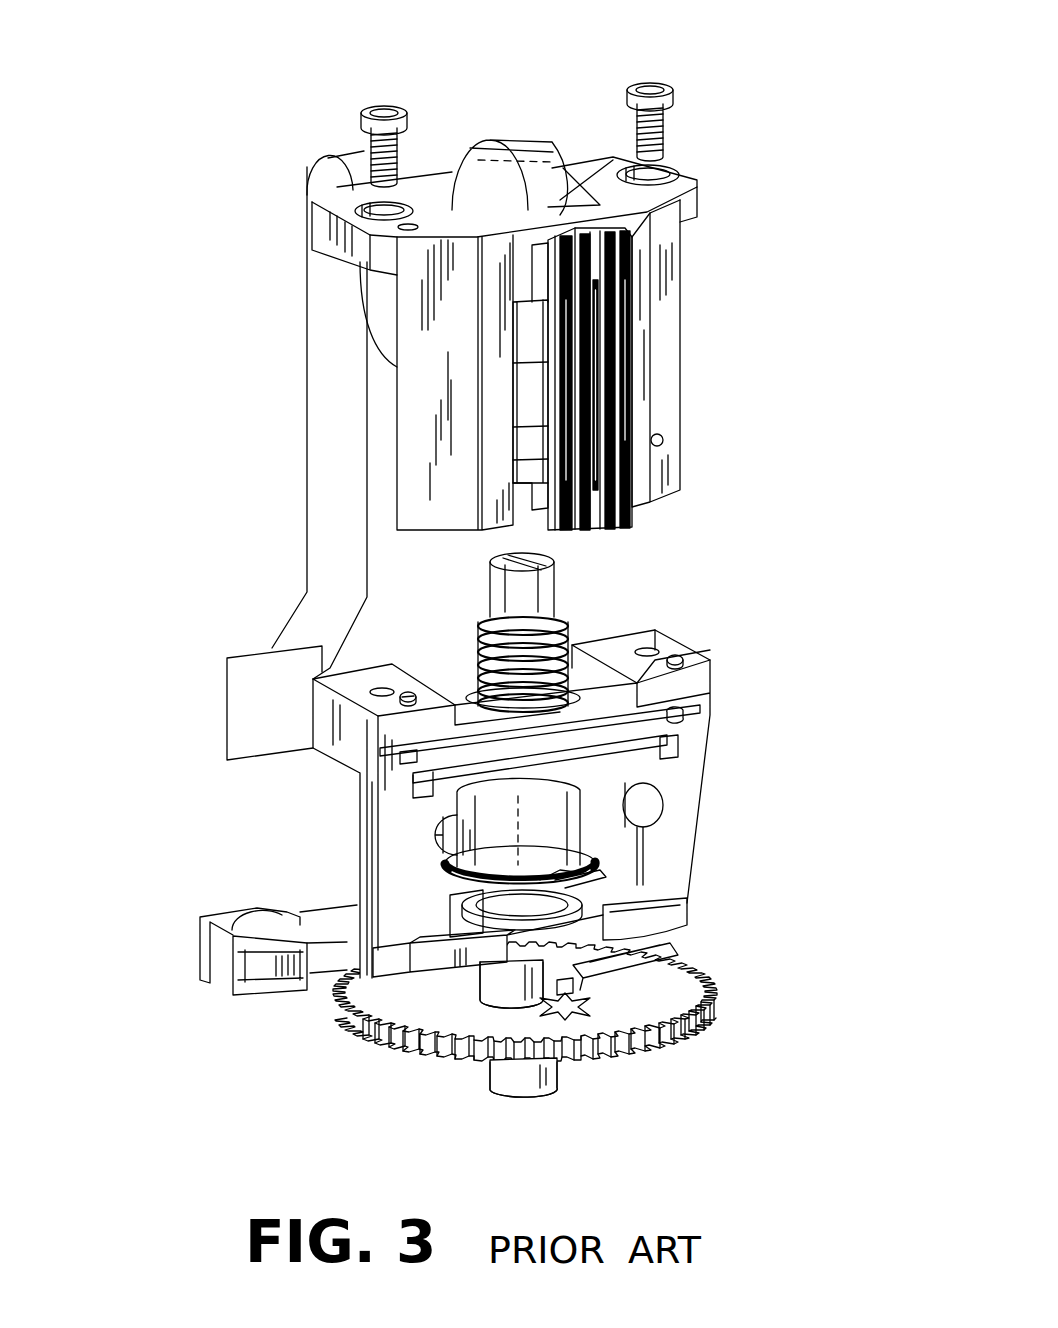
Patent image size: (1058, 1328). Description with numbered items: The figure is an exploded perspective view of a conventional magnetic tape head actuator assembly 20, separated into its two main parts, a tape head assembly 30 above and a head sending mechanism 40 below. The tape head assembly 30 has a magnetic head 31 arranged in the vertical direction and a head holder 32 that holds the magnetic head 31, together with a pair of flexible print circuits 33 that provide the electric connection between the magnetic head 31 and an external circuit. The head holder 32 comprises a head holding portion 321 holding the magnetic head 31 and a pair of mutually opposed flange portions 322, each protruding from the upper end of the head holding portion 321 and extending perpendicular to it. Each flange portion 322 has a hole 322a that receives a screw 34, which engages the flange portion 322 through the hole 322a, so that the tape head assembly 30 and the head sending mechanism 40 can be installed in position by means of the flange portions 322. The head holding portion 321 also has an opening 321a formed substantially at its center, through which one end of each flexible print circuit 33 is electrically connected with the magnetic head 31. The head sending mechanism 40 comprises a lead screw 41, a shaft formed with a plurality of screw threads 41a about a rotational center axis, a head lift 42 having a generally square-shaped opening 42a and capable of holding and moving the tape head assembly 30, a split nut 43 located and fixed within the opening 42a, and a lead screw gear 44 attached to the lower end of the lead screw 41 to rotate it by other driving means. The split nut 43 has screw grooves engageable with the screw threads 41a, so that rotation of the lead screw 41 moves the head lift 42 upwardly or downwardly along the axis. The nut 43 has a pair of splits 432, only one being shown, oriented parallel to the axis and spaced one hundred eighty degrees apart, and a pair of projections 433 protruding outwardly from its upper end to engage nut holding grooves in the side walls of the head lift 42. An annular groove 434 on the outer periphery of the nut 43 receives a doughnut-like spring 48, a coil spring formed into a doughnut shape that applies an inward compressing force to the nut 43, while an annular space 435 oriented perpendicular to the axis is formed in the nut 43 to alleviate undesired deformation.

The tape head assembly 30 is at (693, 273).
The magnetic head 31 is at (637, 328).
The head holder 32 is at (668, 403).
The head holding portion 321 is at (663, 366).
The opening 321a is at (513, 447).
The flange portion 322 is at (693, 174).
The hole 322a is at (412, 203).
The flexible print circuit 33 is at (527, 138).
The screw 34 is at (383, 106).
The head sending mechanism 40 is at (650, 1060).
The lead screw 41 is at (550, 628).
The screw threads 41a is at (703, 663).
The head lift 42 is at (690, 765).
The opening 42a is at (460, 903).
The split nut 43 is at (563, 823).
The split 432 is at (445, 838).
The projection 433 is at (687, 747).
The annular groove 434 is at (620, 930).
The annular space 435 is at (605, 800).
The lead screw gear 44 is at (718, 1005).
The doughnut-like spring 48 is at (607, 877).
The magnetic tape head actuator assembly 20 is at (225, 999).